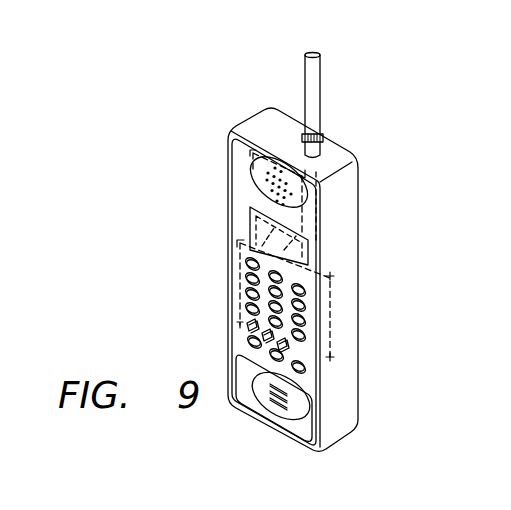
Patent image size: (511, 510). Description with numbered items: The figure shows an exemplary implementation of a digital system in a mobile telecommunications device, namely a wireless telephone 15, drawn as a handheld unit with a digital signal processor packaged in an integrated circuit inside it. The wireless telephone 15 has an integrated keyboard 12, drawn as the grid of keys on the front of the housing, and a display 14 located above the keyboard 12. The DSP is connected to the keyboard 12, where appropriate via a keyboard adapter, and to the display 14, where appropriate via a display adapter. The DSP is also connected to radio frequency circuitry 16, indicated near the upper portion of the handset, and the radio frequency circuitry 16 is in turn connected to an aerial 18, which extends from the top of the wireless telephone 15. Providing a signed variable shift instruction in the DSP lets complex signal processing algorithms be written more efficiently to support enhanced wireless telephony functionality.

The keyboard 12 is at (250, 292).
The display 14 is at (252, 236).
The wireless telephone 15 is at (353, 378).
The radio frequency circuitry 16 is at (254, 196).
The aerial 18 is at (315, 87).